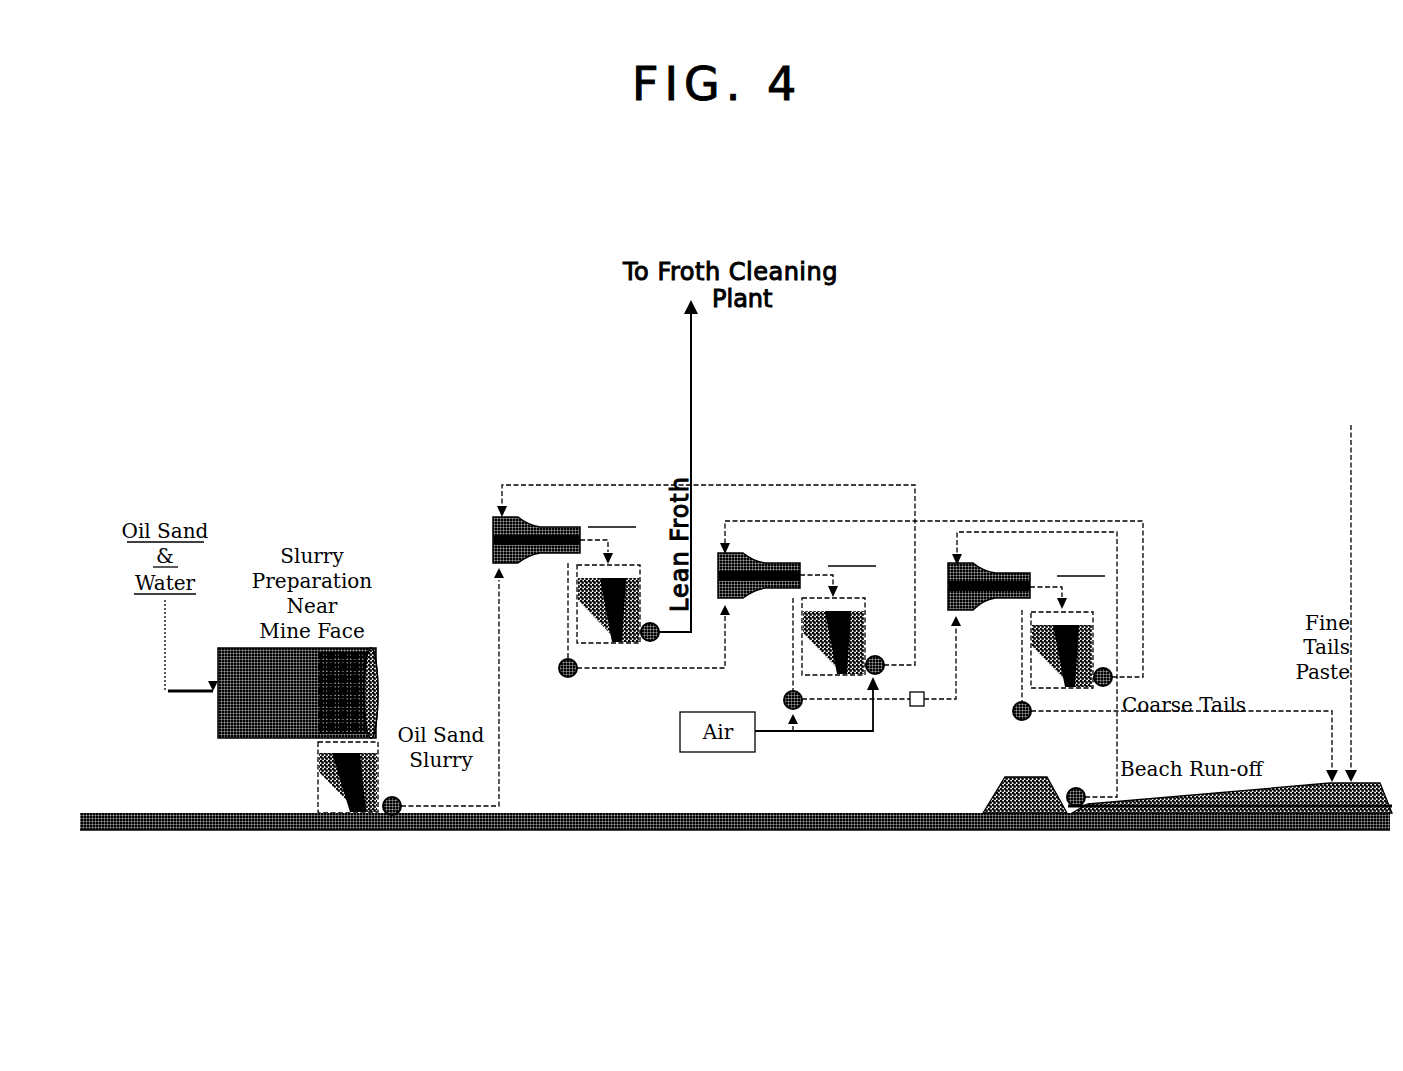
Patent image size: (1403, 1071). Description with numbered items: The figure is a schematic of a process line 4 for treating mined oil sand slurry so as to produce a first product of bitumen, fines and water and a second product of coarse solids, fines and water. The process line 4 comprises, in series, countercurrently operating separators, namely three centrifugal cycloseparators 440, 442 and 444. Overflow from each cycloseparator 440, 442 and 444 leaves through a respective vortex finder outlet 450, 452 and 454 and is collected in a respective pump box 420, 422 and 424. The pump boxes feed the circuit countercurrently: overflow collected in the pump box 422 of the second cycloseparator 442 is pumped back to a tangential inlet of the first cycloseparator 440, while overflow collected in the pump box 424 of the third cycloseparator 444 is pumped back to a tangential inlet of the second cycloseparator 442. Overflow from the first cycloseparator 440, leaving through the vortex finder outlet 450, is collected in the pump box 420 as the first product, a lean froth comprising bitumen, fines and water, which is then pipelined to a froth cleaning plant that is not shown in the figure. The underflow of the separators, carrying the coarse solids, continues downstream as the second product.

The process line 4 is at (1090, 392).
The centrifugal cycloseparator 440 is at (540, 520).
The vortex finder outlet 450 is at (580, 543).
The pump box 420 is at (634, 572).
The centrifugal cycloseparator 442 is at (762, 553).
The vortex finder outlet 452 is at (803, 572).
The pump box 422 is at (848, 600).
The centrifugal cycloseparator 444 is at (985, 565).
The vortex finder outlet 454 is at (1036, 582).
The pump box 424 is at (1084, 612).